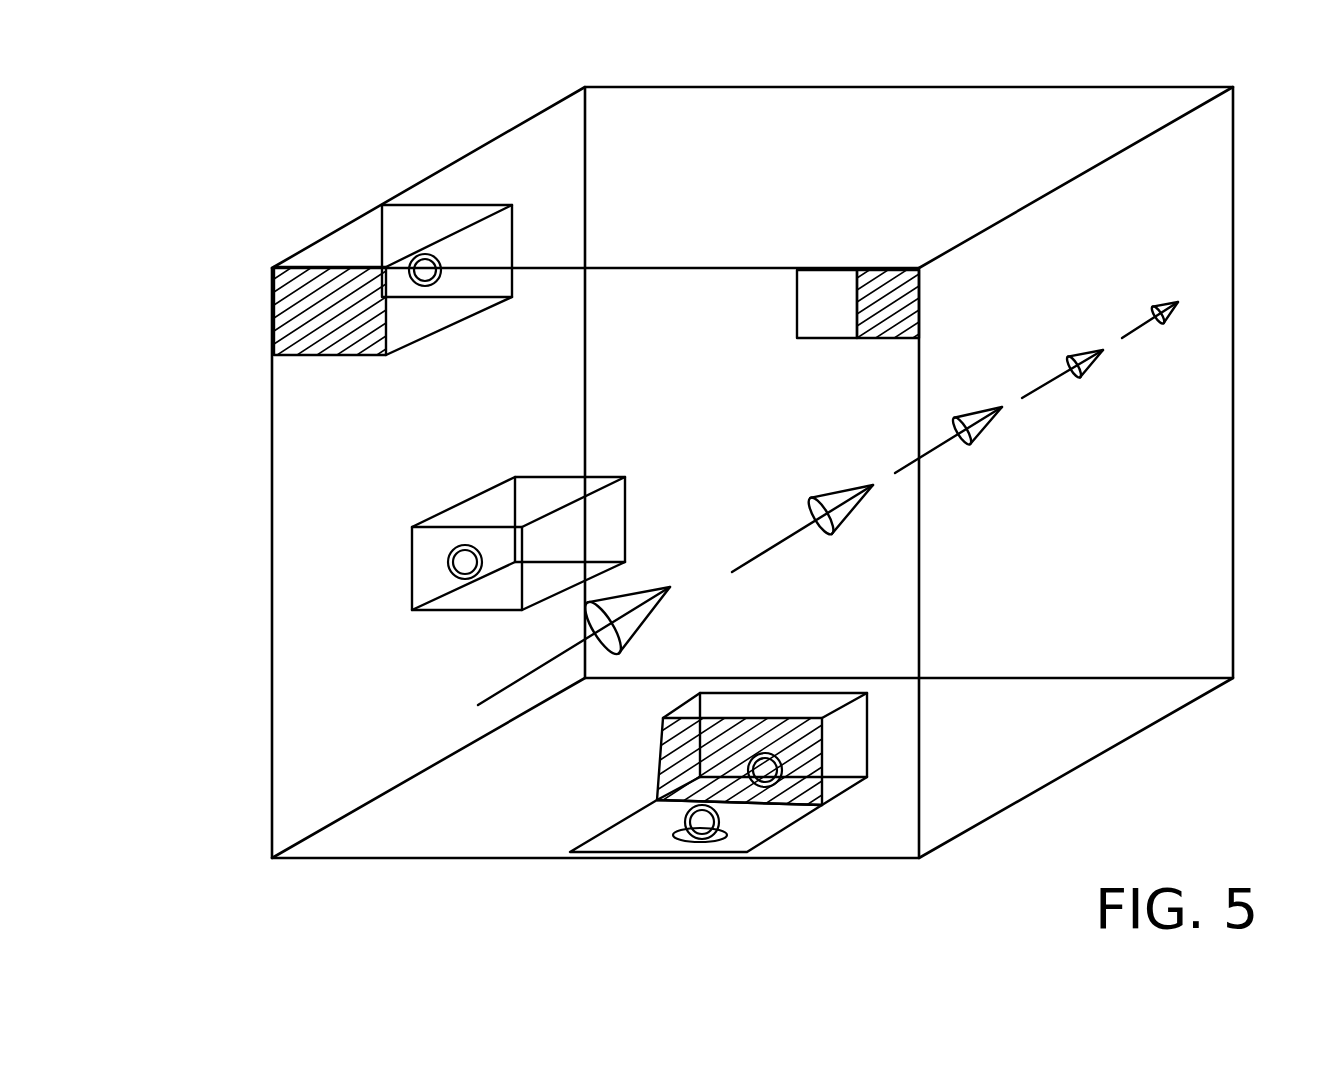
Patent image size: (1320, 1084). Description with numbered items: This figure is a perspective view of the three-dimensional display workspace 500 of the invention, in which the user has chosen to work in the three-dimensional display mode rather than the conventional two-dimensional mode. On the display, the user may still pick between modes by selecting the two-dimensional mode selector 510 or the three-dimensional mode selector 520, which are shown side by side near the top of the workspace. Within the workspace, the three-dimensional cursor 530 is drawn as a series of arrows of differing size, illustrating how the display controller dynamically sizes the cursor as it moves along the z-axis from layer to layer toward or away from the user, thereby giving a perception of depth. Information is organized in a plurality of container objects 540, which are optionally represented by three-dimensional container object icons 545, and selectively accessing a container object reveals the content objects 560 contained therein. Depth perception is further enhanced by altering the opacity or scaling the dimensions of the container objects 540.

The display 500 is at (272, 380).
The two-dimensional mode selector 510 is at (808, 270).
The three-dimensional mode selector 520 is at (895, 270).
The three-dimensional cursor 530 is at (1148, 309).
The container objects 540 is at (450, 205).
The three-dimensional container object icons 545 is at (437, 282).
The content objects 560 is at (660, 725).